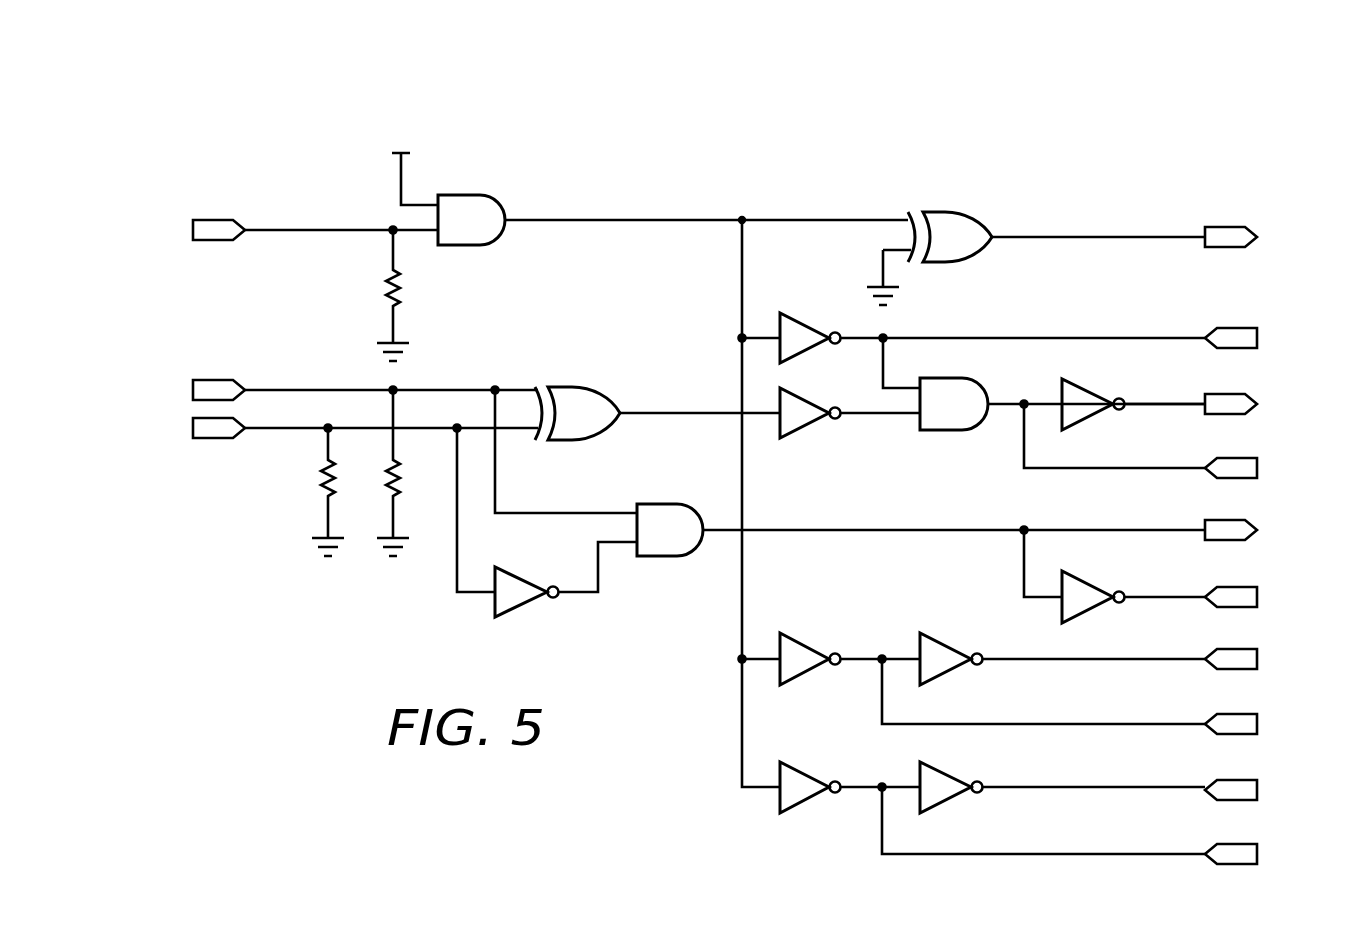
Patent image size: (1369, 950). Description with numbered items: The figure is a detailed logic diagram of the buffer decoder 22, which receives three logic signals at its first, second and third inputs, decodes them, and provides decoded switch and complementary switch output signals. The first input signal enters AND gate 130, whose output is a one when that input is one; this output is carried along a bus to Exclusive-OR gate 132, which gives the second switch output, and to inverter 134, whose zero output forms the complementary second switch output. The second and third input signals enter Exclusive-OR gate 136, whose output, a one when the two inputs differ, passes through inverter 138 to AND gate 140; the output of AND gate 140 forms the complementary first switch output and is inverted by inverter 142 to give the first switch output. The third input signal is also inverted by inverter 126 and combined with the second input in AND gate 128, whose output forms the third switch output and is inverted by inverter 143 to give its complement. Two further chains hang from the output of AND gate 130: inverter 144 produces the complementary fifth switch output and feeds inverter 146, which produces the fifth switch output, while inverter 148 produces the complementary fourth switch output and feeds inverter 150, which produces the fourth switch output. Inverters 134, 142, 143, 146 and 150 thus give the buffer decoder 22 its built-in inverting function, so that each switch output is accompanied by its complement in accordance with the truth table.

The buffer decoder 22 is at (303, 188).
The inverter 126 is at (521, 588).
The AND gate 128 is at (657, 546).
The AND gate 130 is at (455, 236).
The Exclusive-OR gate 132 is at (946, 252).
The inverter 134 is at (781, 331).
The Exclusive-OR gate 136 is at (559, 430).
The inverter 138 is at (781, 405).
The AND gate 140 is at (941, 420).
The inverter 142 is at (1078, 418).
The inverter 143 is at (1078, 611).
The inverter 144 is at (810, 666).
The inverter 146 is at (931, 679).
The inverter 148 is at (810, 794).
The inverter 150 is at (931, 807).